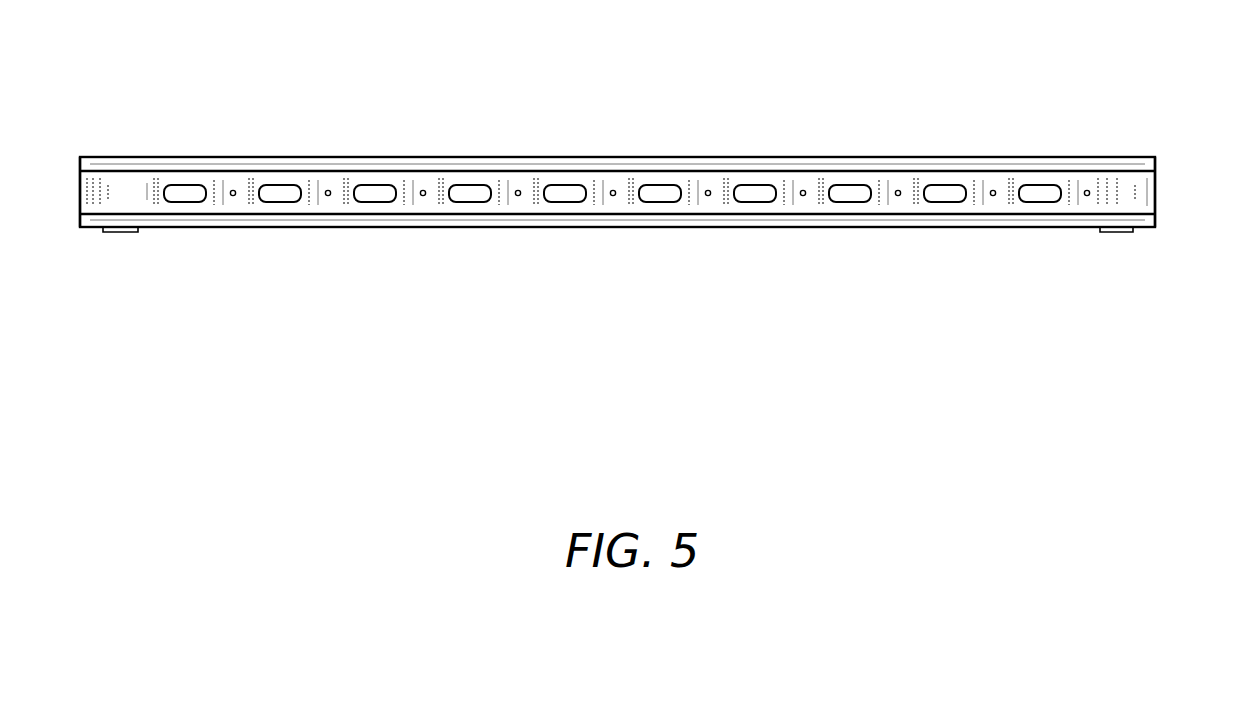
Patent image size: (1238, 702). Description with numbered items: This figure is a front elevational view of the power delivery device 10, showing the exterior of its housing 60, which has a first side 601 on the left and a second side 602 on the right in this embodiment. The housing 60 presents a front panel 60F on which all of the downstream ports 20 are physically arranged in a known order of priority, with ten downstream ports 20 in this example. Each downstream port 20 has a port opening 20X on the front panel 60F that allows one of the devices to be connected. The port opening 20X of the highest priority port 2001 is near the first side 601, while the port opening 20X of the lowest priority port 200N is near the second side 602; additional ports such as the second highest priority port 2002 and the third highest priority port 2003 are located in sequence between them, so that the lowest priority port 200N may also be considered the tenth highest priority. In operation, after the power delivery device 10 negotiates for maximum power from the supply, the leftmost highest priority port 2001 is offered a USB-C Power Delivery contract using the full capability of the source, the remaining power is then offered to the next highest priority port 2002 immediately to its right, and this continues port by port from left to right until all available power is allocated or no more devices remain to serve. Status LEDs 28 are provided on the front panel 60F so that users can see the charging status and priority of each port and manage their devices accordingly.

The power delivery device 10 is at (86, 100).
The downstream ports 20 is at (598, 256).
The port opening 20X is at (171, 244).
The status LEDs 28 is at (328, 190).
The housing 60 is at (383, 158).
The front panel 60F is at (731, 178).
The first side 601 is at (80, 196).
The second side 602 is at (1157, 188).
The highest priority port 2001 is at (190, 203).
The second highest priority port 2002 is at (284, 203).
The third highest priority port 2003 is at (378, 203).
The lowest priority port 200N is at (1043, 203).